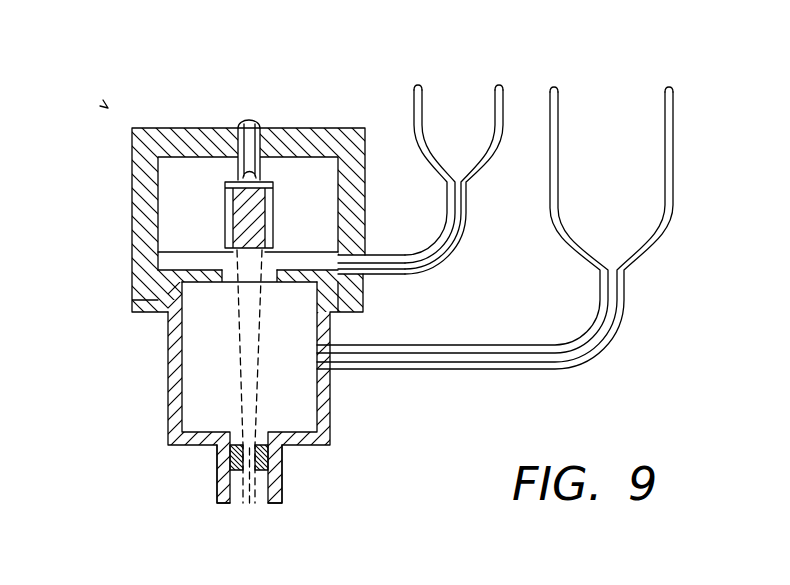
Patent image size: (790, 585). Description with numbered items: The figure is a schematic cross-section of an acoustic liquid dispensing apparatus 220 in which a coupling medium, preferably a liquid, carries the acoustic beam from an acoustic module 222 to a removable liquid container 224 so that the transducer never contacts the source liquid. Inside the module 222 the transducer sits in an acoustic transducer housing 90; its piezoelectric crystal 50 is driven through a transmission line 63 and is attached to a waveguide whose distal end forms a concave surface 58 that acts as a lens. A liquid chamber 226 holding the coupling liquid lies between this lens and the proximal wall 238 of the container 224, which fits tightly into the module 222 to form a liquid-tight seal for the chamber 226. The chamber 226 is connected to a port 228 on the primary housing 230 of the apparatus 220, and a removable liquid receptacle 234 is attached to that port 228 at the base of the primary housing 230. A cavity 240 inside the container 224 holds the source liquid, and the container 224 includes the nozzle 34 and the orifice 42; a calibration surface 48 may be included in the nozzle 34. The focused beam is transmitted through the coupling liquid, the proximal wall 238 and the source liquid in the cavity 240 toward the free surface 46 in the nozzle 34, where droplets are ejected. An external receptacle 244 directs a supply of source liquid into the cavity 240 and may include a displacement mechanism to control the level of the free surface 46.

The acoustic liquid dispensing apparatus 220 is at (108, 108).
The acoustic module 222 is at (366, 178).
The acoustic transducer housing 90 is at (170, 178).
The primary housing 230 is at (132, 241).
The transmission line 63 is at (233, 84).
The piezoelectric crystal 50 is at (258, 183).
The liquid chamber 226 is at (137, 276).
The proximal wall 238 is at (193, 282).
The liquid container 224 is at (332, 405).
The cavity 240 is at (195, 410).
The concave surface 58 is at (252, 272).
The calibration surface 48 is at (240, 445).
The nozzle 34 is at (282, 473).
The free surface 46 is at (238, 503).
The orifice 42 is at (258, 503).
The port 228 is at (373, 274).
The removable liquid receptacle 234 is at (508, 97).
The external receptacle 244 is at (674, 147).